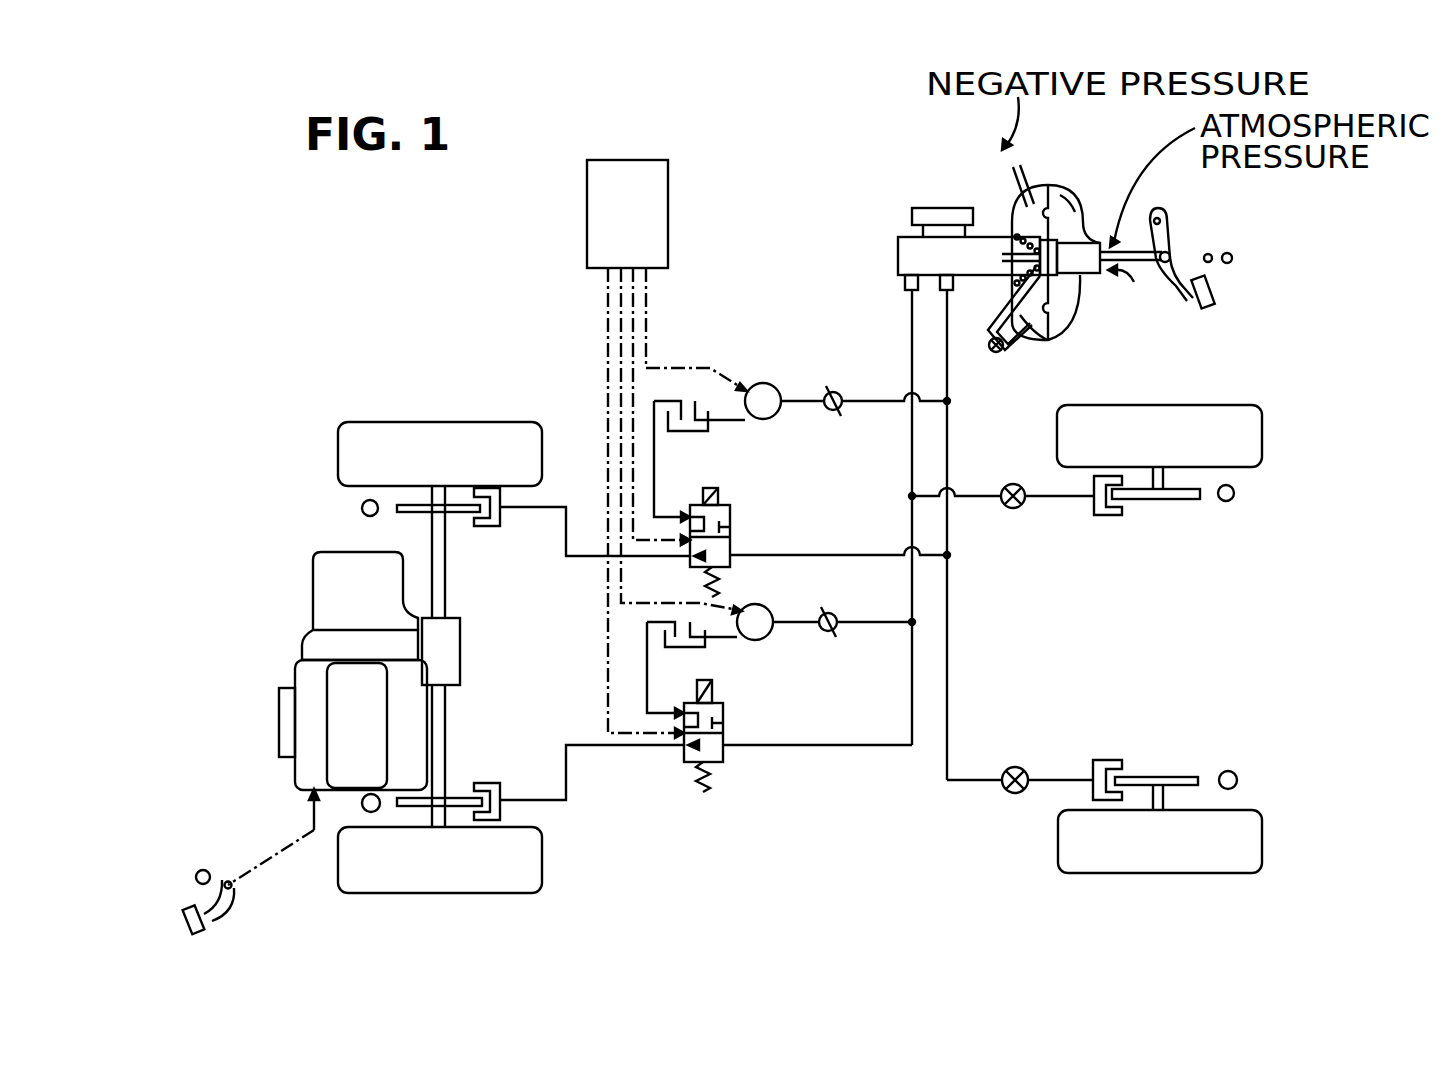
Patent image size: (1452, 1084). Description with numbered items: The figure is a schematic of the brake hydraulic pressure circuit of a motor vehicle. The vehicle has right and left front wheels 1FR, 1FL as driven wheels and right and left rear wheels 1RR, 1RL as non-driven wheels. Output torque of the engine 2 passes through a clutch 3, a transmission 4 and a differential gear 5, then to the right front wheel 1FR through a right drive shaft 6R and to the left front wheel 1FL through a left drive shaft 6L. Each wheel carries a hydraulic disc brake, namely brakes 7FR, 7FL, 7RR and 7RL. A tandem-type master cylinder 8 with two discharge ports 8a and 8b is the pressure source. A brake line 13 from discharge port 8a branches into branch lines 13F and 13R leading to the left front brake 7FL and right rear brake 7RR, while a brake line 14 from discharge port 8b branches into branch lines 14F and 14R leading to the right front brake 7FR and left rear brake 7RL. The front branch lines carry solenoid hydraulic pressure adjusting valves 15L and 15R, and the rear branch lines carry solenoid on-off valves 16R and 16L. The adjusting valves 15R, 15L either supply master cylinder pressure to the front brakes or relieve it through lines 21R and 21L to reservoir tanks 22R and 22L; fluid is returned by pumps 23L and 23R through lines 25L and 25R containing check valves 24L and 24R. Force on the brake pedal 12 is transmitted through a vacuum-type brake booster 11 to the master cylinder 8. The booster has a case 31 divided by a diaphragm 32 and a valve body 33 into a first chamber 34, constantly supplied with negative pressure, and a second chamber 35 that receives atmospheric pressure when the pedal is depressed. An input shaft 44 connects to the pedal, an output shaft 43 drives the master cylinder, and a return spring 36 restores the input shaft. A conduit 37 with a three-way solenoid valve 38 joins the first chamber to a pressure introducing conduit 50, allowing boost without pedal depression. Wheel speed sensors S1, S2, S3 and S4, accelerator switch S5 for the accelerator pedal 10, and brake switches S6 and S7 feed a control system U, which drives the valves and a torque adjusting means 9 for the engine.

The right front wheel 1FR is at (430, 420).
The left front wheel 1FL is at (420, 893).
The right rear wheel 1RR is at (1262, 425).
The left rear wheel 1RL is at (1220, 873).
The engine 2 is at (303, 790).
The clutch 3 is at (310, 648).
The transmission 4 is at (318, 583).
The differential gear 5 is at (450, 660).
The right drive shaft 6R is at (446, 592).
The left drive shaft 6L is at (446, 752).
The right front brake 7FR is at (512, 522).
The left front brake 7FL is at (512, 808).
The right rear brake 7RR is at (1158, 510).
The left rear brake 7RL is at (1178, 768).
The master cylinder 8 is at (897, 243).
The discharge port 8a is at (904, 283).
The discharge port 8b is at (953, 283).
The torque adjusting means 9 is at (279, 723).
The accelerator pedal 10 is at (228, 905).
The brake booster 11 is at (1046, 172).
The brake pedal 12 is at (1195, 312).
The brake line 13 is at (910, 312).
The branch line 13R is at (1053, 500).
The branch line 13F is at (805, 745).
The brake line 14 is at (949, 440).
The branch line 14F is at (770, 555).
The branch line 14R is at (970, 783).
The solenoid hydraulic pressure adjusting valve 15R is at (740, 500).
The solenoid hydraulic pressure adjusting valve 15L is at (735, 722).
The solenoid on-off valve 16R is at (1005, 507).
The solenoid on-off valve 16L is at (1022, 770).
The line 21R is at (652, 455).
The line 21L is at (647, 672).
The reservoir tank 22R is at (708, 420).
The reservoir tank 22L is at (705, 640).
The pump 23R is at (758, 383).
The pump 23L is at (752, 604).
The check valve 24R is at (832, 392).
The check valve 24L is at (826, 613).
The line 25R is at (868, 402).
The line 25L is at (860, 623).
The case 31 is at (1077, 210).
The diaphragm 32 is at (1058, 292).
The valve body 33 is at (1085, 262).
The first chamber 34 is at (1014, 193).
The second chamber 35 is at (1062, 197).
The return spring 36 is at (1012, 203).
The conduit 37 is at (1012, 352).
The three-way solenoid valve 38 is at (1030, 365).
The output shaft 43 is at (1000, 258).
The input shaft 44 is at (1172, 237).
The pressure introducing conduit 50 is at (990, 350).
The wheel speed sensor S1 is at (362, 808).
The wheel speed sensor S2 is at (362, 512).
The wheel speed sensor S3 is at (1238, 780).
The wheel speed sensor S4 is at (1235, 495).
The accelerator switch S5 is at (198, 871).
The brake pedal switch S6 is at (1210, 264).
The brake pedal switch S7 is at (1233, 258).
The control system U is at (668, 218).